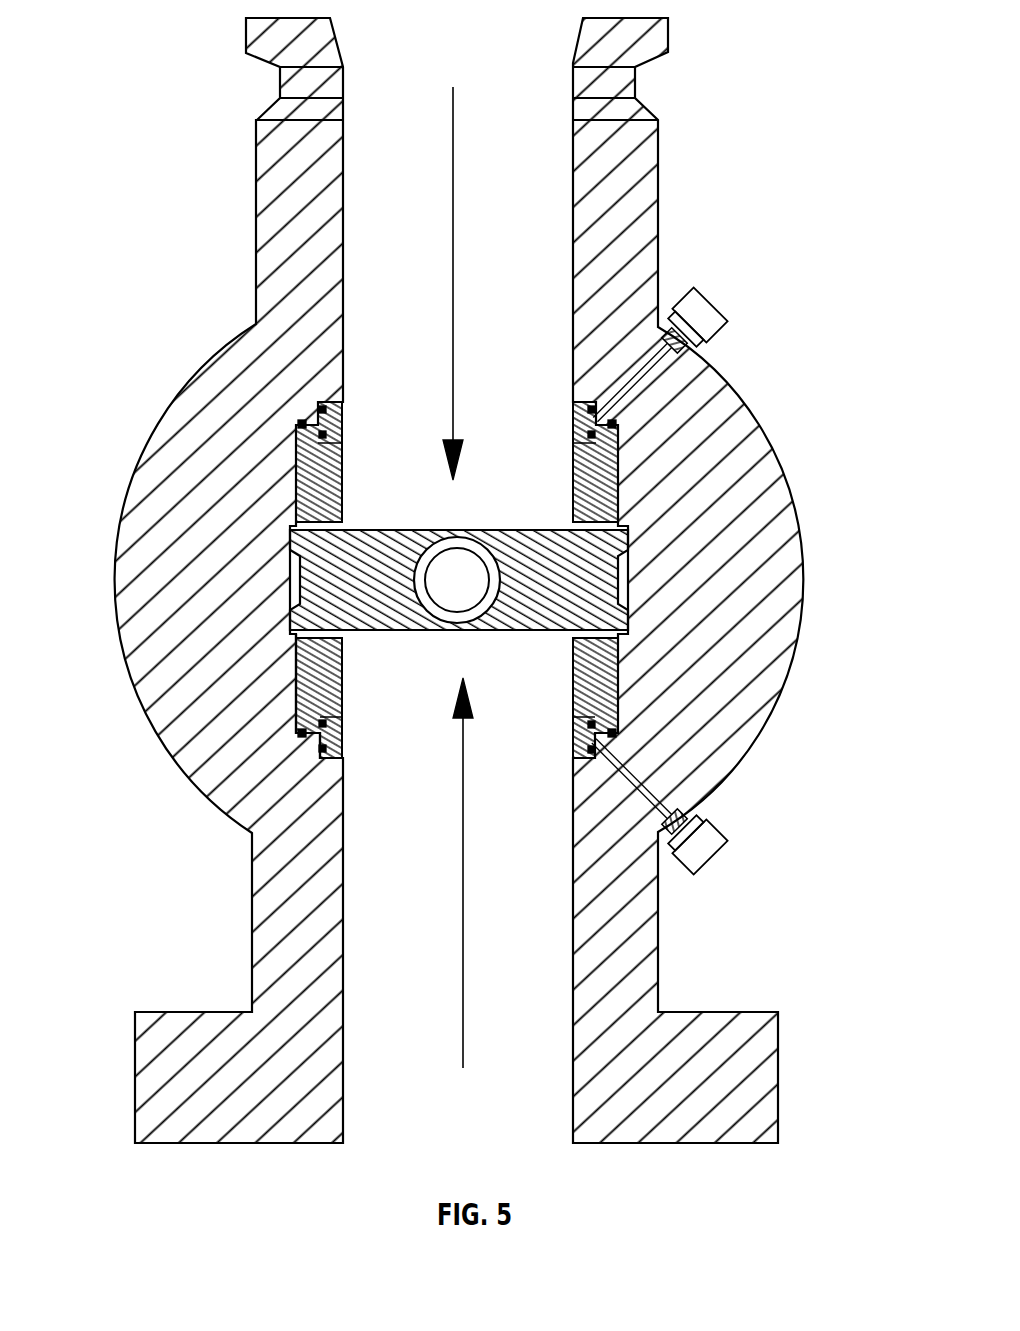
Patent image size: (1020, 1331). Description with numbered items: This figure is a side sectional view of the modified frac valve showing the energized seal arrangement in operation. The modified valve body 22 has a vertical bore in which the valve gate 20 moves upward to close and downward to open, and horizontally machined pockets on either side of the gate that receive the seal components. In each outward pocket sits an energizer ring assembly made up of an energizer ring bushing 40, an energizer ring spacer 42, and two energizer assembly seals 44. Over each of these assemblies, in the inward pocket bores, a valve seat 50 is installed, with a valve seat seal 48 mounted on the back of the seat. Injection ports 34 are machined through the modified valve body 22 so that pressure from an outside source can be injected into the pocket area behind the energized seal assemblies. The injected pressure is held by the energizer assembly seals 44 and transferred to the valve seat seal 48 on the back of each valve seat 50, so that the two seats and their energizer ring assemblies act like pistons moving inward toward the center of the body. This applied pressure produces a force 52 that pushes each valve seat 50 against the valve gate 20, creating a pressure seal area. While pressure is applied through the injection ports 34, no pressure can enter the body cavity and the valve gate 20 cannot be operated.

The valve gate 20 is at (628, 550).
The modified valve body 22 is at (782, 380).
The injection ports 34 is at (717, 298).
The energizer ring bushing 40 is at (307, 772).
The energizer ring spacer 42 is at (321, 745).
The energizer assembly seals 44 is at (300, 731).
The valve seat seal 48 is at (614, 733).
The valve seat 50 is at (297, 467).
The force 52 is at (463, 582).